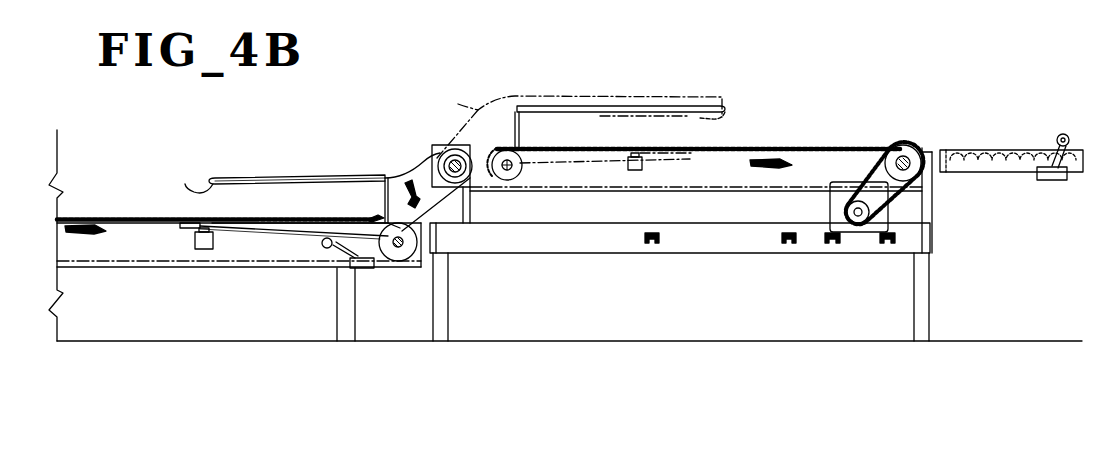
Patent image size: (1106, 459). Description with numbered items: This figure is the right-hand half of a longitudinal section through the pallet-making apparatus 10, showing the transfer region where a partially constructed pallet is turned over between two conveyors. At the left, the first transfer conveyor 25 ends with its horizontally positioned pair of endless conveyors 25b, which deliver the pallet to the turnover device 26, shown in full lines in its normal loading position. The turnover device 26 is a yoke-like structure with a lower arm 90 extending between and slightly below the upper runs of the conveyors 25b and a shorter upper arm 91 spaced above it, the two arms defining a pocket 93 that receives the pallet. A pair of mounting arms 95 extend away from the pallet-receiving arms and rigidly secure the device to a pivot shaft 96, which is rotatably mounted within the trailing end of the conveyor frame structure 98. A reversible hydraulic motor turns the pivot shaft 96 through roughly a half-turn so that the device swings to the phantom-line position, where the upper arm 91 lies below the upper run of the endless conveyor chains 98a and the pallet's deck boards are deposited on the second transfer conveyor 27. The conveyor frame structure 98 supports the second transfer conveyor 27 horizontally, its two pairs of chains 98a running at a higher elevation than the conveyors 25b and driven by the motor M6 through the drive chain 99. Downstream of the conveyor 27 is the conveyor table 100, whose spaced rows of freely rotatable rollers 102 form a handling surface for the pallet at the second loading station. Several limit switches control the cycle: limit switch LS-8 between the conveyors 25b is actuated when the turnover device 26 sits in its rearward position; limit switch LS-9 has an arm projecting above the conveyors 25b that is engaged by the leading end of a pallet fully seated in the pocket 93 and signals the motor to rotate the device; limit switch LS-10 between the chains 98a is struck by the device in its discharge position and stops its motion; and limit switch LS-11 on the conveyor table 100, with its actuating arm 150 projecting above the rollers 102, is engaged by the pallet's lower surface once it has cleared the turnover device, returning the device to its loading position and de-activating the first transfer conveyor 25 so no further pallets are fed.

The apparatus 10 is at (730, 64).
The transfer conveyor 25 is at (101, 216).
The endless conveyors 25b is at (124, 217).
The turnover device 26 is at (288, 166).
The second transfer conveyor 27 is at (775, 144).
The lower arm 90 is at (232, 228).
The upper arm 91 is at (251, 177).
The pocket 93 is at (748, 110).
The mounting arms 95 is at (341, 177).
The pivot shaft 96 is at (446, 157).
The conveyor frame structure 98 is at (458, 234).
The endless conveyor chains 98a is at (836, 148).
The drive chain 99 is at (880, 166).
The conveyor table 100 is at (991, 166).
The rollers 102 is at (968, 149).
The actuating arm 150 is at (1058, 136).
The limit switch LS-8 is at (195, 240).
The limit switch LS-9 is at (385, 276).
The limit switch LS-10 is at (643, 165).
The limit switch LS-11 is at (1038, 177).
The motor M6 is at (832, 205).